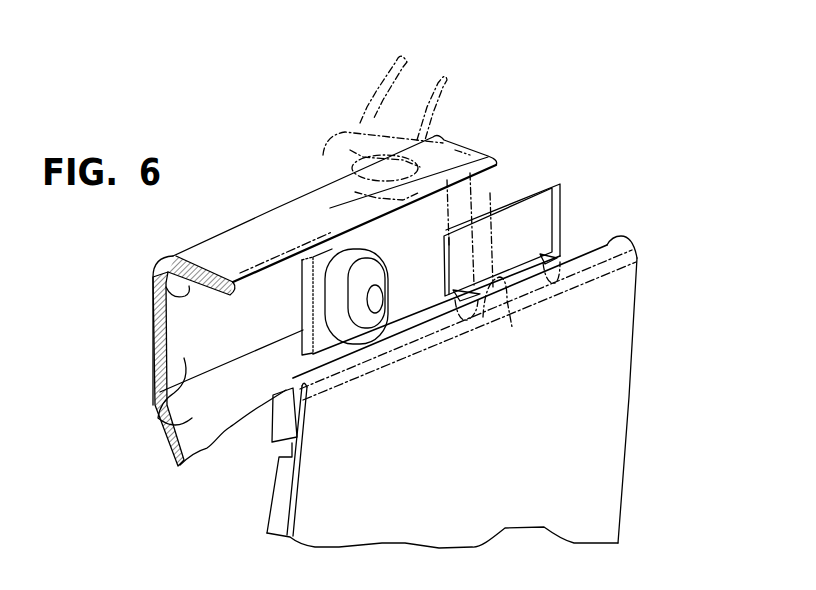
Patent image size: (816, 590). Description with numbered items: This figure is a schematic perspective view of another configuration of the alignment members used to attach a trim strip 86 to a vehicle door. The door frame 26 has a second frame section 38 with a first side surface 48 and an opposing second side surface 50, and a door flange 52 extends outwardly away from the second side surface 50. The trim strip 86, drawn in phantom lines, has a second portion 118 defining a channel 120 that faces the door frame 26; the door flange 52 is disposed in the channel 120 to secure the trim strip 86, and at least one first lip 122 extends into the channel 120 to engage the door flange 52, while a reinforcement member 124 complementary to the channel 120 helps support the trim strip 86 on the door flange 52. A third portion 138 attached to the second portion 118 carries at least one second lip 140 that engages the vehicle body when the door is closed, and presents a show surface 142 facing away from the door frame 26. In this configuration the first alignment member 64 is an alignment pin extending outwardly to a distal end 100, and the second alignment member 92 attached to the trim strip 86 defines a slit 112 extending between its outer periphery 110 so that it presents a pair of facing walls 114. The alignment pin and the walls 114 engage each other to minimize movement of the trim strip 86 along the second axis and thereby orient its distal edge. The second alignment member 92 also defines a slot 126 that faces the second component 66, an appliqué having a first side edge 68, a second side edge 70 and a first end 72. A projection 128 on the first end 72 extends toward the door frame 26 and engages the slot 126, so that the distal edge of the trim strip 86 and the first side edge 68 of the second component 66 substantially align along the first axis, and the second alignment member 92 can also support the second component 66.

The door frame 26 is at (118, 390).
The second frame section 38 is at (156, 282).
The first side surface 48 is at (158, 420).
The second side surface 50 is at (154, 331).
The door flange 52 is at (239, 255).
The first alignment member 64 is at (357, 280).
The second component 66 is at (562, 485).
The first side edge 68 is at (640, 401).
The second side edge 70 is at (283, 493).
The first end 72 is at (605, 252).
The trim strip 86 is at (347, 76).
The second alignment member 92 is at (561, 197).
The distal end 100 is at (348, 337).
The outer periphery 110 is at (298, 343).
The slit 112 is at (356, 245).
The walls 114 is at (357, 271).
The second portion 118 is at (463, 142).
The channel 120 is at (335, 172).
The first lip 122 is at (400, 140).
The reinforcement member 124 is at (480, 233).
The slot 126 is at (554, 238).
The projection 128 is at (492, 282).
The third portion 138 is at (470, 190).
The second lip 140 is at (398, 53).
The show surface 142 is at (502, 193).